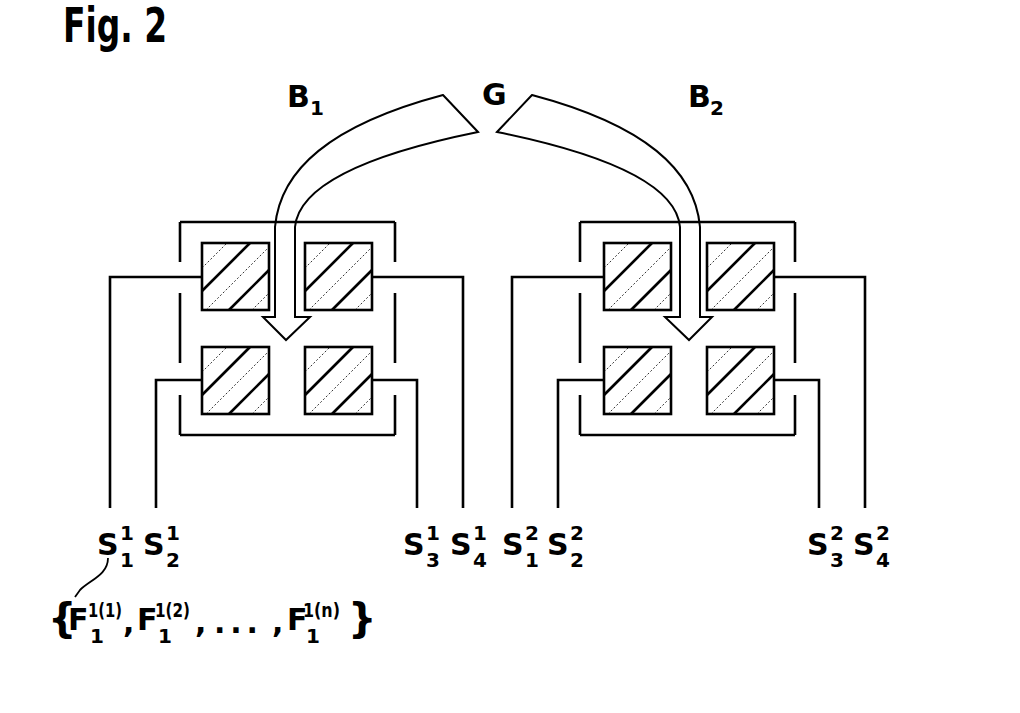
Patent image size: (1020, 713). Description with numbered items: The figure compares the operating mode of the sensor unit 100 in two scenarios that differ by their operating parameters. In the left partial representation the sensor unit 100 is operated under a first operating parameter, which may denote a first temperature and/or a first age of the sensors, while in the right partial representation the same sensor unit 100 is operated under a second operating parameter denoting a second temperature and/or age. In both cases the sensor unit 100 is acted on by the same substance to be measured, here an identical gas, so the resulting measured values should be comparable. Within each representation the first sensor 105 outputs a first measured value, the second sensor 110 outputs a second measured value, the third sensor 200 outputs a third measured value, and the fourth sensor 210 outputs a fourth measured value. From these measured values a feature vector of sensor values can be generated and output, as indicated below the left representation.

The sensor unit 100 is at (207, 222).
The first sensor 105 is at (233, 243).
The second sensor 110 is at (233, 414).
The third sensor 200 is at (340, 414).
The fourth sensor 210 is at (338, 243).